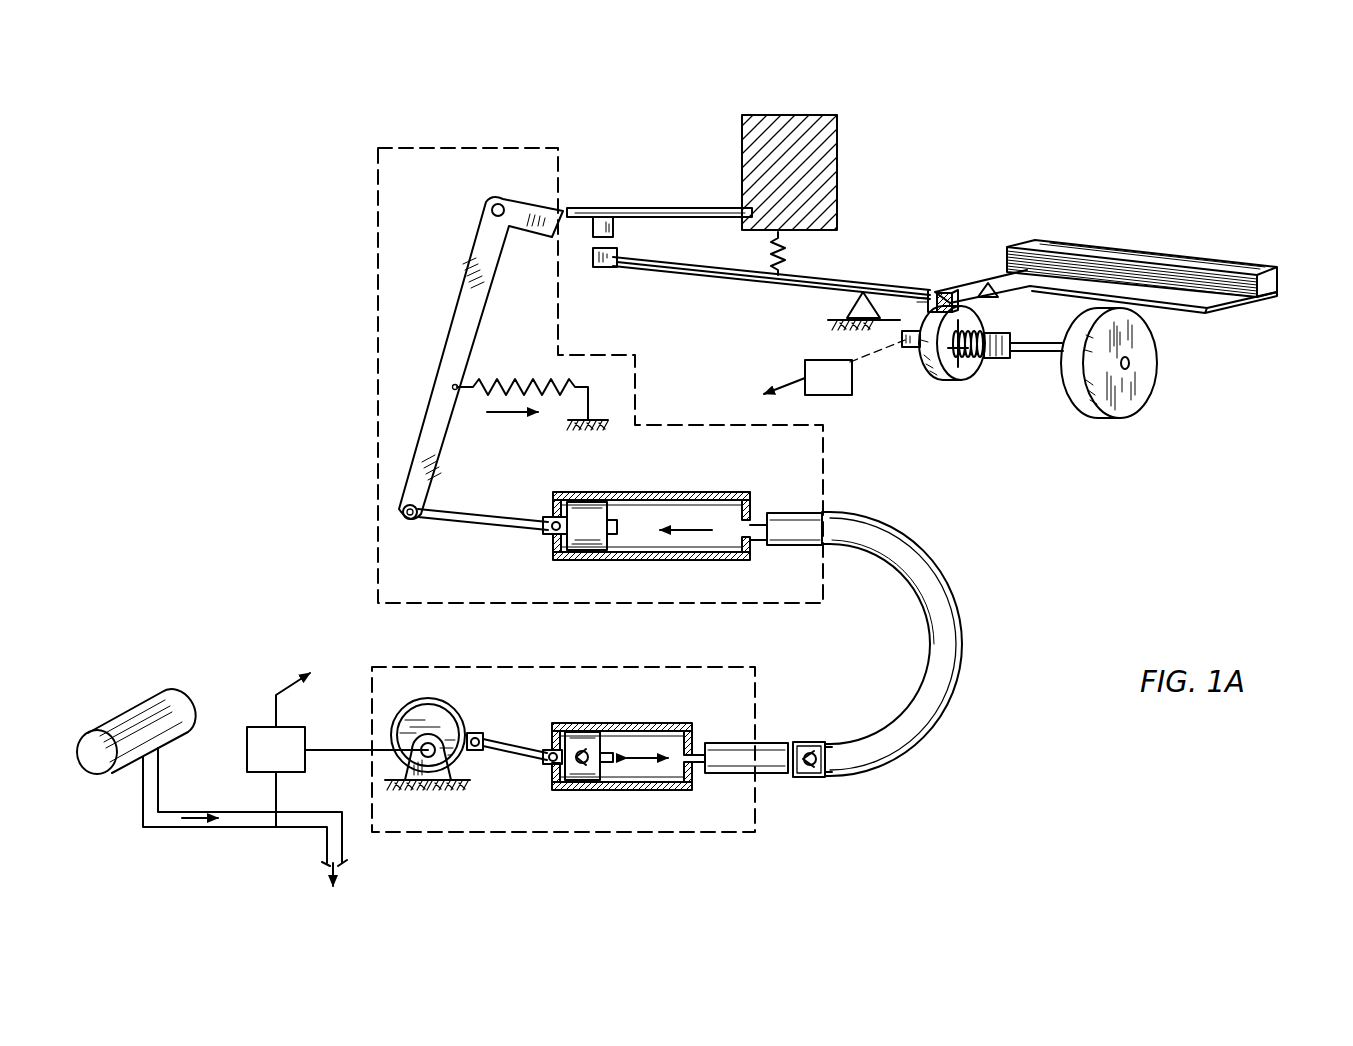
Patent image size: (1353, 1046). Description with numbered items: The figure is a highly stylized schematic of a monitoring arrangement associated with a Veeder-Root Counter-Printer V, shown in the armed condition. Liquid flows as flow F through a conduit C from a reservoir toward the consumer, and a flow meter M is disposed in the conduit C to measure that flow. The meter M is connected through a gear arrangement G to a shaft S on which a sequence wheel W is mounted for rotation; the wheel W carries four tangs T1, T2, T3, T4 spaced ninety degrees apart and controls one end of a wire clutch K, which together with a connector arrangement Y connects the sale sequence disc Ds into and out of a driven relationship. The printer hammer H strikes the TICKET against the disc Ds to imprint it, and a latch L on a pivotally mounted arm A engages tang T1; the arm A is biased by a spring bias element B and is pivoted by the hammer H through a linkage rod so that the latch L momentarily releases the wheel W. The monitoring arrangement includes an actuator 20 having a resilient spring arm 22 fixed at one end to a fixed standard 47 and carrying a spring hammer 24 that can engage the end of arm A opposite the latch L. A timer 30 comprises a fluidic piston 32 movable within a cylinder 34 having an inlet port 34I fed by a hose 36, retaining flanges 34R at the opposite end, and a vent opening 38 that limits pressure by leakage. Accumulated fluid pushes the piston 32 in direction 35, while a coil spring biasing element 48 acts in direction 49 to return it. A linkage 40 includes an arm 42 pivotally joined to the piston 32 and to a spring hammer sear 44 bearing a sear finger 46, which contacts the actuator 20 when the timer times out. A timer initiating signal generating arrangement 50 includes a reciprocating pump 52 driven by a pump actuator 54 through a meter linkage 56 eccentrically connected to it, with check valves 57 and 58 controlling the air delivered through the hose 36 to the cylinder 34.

The actuator 20 is at (691, 204).
The resilient spring arm 22 is at (660, 208).
The spring hammer 24 is at (600, 225).
The timer 30 is at (810, 618).
The fluidic piston 32 is at (585, 551).
The cylinder 34 is at (667, 558).
The retaining flanges 34R is at (556, 553).
The inlet port 34I is at (766, 548).
The direction of biasing force 35 is at (702, 533).
The hose 36 is at (938, 715).
The vent opening 38 is at (617, 548).
The linkage 40 is at (432, 326).
The arm 42 is at (482, 527).
The spring hammer sear 44 is at (413, 466).
The sear finger 46 is at (533, 213).
The fixed standard 47 is at (830, 185).
The biasing element 48 is at (510, 380).
The direction of biasing force 49 is at (500, 413).
The timer initiating signal generating arrangement 50 is at (764, 813).
The reciprocating pump 52 is at (648, 790).
The pump actuator 54 is at (460, 760).
The meter linkage 56 is at (333, 745).
The check valve 57 is at (580, 753).
The check valve 58 is at (820, 776).
The pivotally mounted arm A is at (818, 287).
The bias element B is at (775, 264).
The conduit C is at (167, 828).
The flow F is at (198, 826).
The gear arrangement G is at (777, 378).
The rubberized hammer H is at (1175, 250).
The wire clutch K is at (998, 362).
The latch L is at (940, 292).
The flow meter M is at (283, 736).
The shaft S is at (903, 345).
The tang T1 is at (977, 313).
The tang T2 is at (996, 329).
The tang T3 is at (970, 362).
The tang T4 is at (916, 390).
The Veeder-Root Counter-Printer V is at (1272, 230).
The sequence wheel W is at (935, 388).
The connector arrangement Y is at (1053, 367).
The sale sequence disc Ds is at (1137, 400).
The ticket TICKET is at (1205, 313).